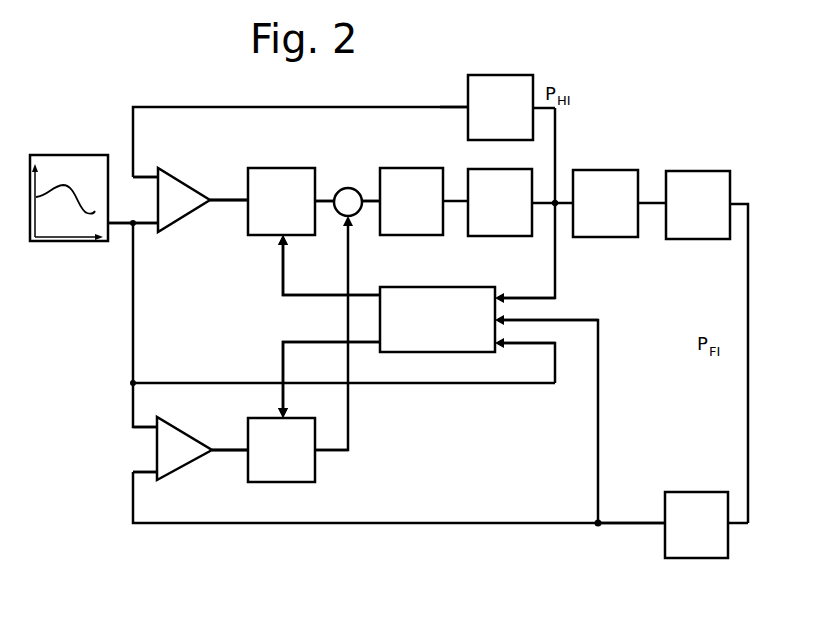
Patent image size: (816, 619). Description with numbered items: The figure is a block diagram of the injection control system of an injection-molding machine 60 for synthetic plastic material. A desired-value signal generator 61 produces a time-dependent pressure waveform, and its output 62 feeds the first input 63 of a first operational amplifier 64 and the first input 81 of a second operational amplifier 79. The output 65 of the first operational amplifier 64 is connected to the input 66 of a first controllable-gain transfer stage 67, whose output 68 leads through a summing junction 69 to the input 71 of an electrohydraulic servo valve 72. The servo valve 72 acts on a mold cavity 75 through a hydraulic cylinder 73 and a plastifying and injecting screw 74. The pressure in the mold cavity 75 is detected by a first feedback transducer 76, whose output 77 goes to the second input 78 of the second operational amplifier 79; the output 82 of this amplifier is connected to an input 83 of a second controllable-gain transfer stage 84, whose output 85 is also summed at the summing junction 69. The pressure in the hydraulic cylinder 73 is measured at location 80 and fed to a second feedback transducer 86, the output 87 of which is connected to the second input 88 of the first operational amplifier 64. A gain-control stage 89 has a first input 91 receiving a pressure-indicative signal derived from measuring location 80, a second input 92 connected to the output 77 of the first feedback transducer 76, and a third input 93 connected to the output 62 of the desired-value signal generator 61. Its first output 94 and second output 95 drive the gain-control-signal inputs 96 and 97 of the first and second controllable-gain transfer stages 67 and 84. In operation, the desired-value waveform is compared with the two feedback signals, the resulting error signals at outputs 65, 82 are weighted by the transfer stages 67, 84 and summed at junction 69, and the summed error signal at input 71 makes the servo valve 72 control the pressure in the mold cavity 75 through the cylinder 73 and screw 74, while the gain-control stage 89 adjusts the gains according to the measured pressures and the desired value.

The injection-molding machine 60 is at (367, 95).
The desired-value signal generator 61 is at (76, 165).
The output of desired-value signal generator 62 is at (115, 228).
The first input of first operational amplifier 63 is at (155, 232).
The first operational amplifier 64 is at (178, 190).
The output of first operational amplifier 65 is at (212, 199).
The input of first controllable-gain transfer stage 66 is at (240, 203).
The first controllable-gain transfer stage 67 is at (268, 182).
The output of first controllable-gain transfer stage 68 is at (326, 212).
The summing junction 69 is at (350, 188).
The input of electrohydraulic servo valve 71 is at (368, 210).
The electrohydraulic servo valve 72 is at (406, 181).
The hydraulic cylinder 73 is at (497, 185).
The plastifying and injecting screw 74 is at (601, 181).
The mold cavity 75 is at (688, 183).
The first feedback transducer 76 is at (690, 502).
The output of first feedback transducer 77 is at (662, 521).
The second input of second operational amplifier 78 is at (152, 478).
The second operational amplifier 79 is at (180, 460).
The measuring location 80 is at (553, 207).
The first input of second operational amplifier 81 is at (160, 425).
The output of second operational amplifier 82 is at (212, 448).
The input of second controllable-gain transfer stage 83 is at (245, 452).
The second controllable-gain transfer stage 84 is at (280, 472).
The output of second controllable-gain transfer stage 85 is at (322, 452).
The second feedback transducer 86 is at (498, 88).
The output of second feedback transducer 87 is at (466, 105).
The second input of first operational amplifier 88 is at (158, 176).
The gain-control stage 89 is at (430, 300).
The first input of gain-control stage 91 is at (502, 296).
The second input of gain-control stage 92 is at (500, 318).
The third input 93 is at (497, 348).
The first output of gain-control stage 94 is at (372, 294).
The second output of gain-control stage 95 is at (378, 345).
The gain-control-signal input of first controllable-gain transfer stage 96 is at (278, 250).
The gain-control-signal input of second controllable-gain transfer stage 97 is at (278, 412).